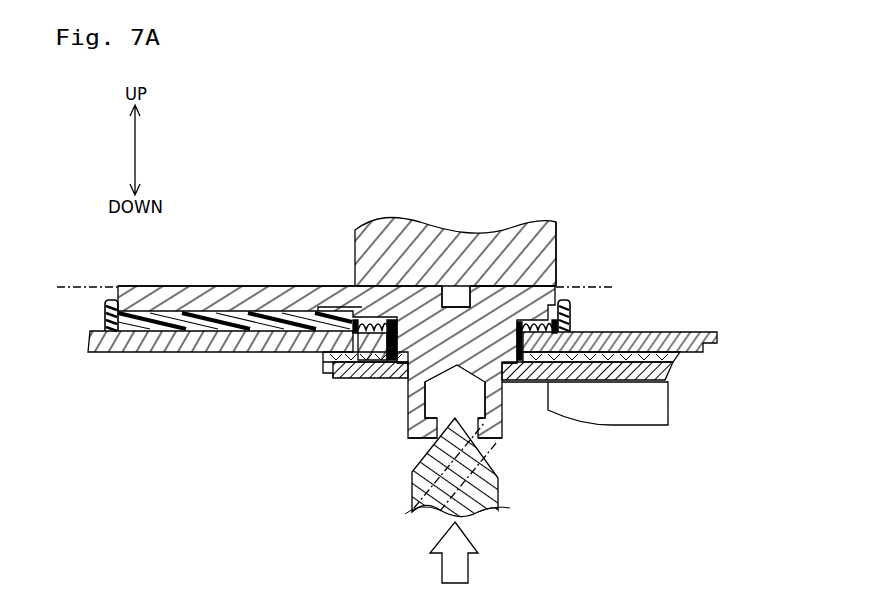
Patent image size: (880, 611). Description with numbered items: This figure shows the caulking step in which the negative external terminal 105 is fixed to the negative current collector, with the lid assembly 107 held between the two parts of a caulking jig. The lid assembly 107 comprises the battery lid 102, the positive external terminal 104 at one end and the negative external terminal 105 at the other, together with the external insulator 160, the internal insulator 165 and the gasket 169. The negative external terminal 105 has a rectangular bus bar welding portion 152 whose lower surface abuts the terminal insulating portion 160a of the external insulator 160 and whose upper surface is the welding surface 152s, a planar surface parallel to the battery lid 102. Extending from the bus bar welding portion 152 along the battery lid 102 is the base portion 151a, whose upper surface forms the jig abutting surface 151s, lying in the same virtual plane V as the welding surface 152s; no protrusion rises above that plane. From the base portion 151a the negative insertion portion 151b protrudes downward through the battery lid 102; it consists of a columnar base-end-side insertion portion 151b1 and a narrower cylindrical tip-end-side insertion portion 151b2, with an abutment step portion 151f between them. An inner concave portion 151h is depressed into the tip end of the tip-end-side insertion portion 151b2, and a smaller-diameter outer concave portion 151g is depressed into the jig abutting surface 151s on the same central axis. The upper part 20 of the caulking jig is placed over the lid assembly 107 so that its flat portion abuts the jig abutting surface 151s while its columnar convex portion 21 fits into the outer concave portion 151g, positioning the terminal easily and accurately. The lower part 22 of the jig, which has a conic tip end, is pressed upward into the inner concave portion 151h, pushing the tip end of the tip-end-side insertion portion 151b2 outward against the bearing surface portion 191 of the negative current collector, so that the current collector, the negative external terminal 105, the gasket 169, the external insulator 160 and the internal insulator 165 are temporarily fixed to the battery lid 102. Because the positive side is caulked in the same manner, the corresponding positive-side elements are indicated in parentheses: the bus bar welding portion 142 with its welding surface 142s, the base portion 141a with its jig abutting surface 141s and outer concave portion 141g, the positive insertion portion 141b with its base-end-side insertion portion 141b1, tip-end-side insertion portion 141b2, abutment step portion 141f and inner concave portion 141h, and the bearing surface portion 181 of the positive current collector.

The lid assembly 107 is at (738, 168).
The upper part of caulking jig 20 is at (378, 240).
The convex portion 21 is at (437, 270).
The lower part of caulking jig 22 is at (438, 508).
The battery lid 102 is at (137, 343).
The positive external terminal 104 is at (189, 322).
The negative external terminal 105 is at (119, 268).
The upper surface 141a is at (623, 294).
The positive insertion portion 141b is at (530, 472).
The first bottom surface 141b1 is at (320, 440).
The second bottom surface 141b2 is at (616, 442).
The flange 141f is at (366, 441).
The groove 141g is at (508, 242).
The hole 141h is at (503, 451).
The side surface 141s is at (644, 244).
The plate 142 is at (447, 347).
The plate side surface 142s is at (236, 251).
The base portion 151a is at (556, 290).
The negative insertion portion 151b is at (507, 423).
The base-end-side insertion portion 151b1 is at (373, 367).
The tip-end-side insertion portion 151b2 is at (502, 403).
The abutment step portion 151f is at (397, 363).
The outer concave portion 151g is at (455, 297).
The inner concave portion 151h is at (512, 420).
The jig abutting surface 151s is at (557, 262).
The bus bar welding portion 152 is at (211, 272).
The welding surface 152s is at (280, 285).
The external insulator 160 is at (94, 321).
The terminal insulating portion 160a is at (190, 322).
The internal insulator 165 is at (323, 358).
The gasket 169 is at (558, 330).
The bearing surface portion 181 is at (296, 410).
The bearing surface portion 191 is at (342, 378).